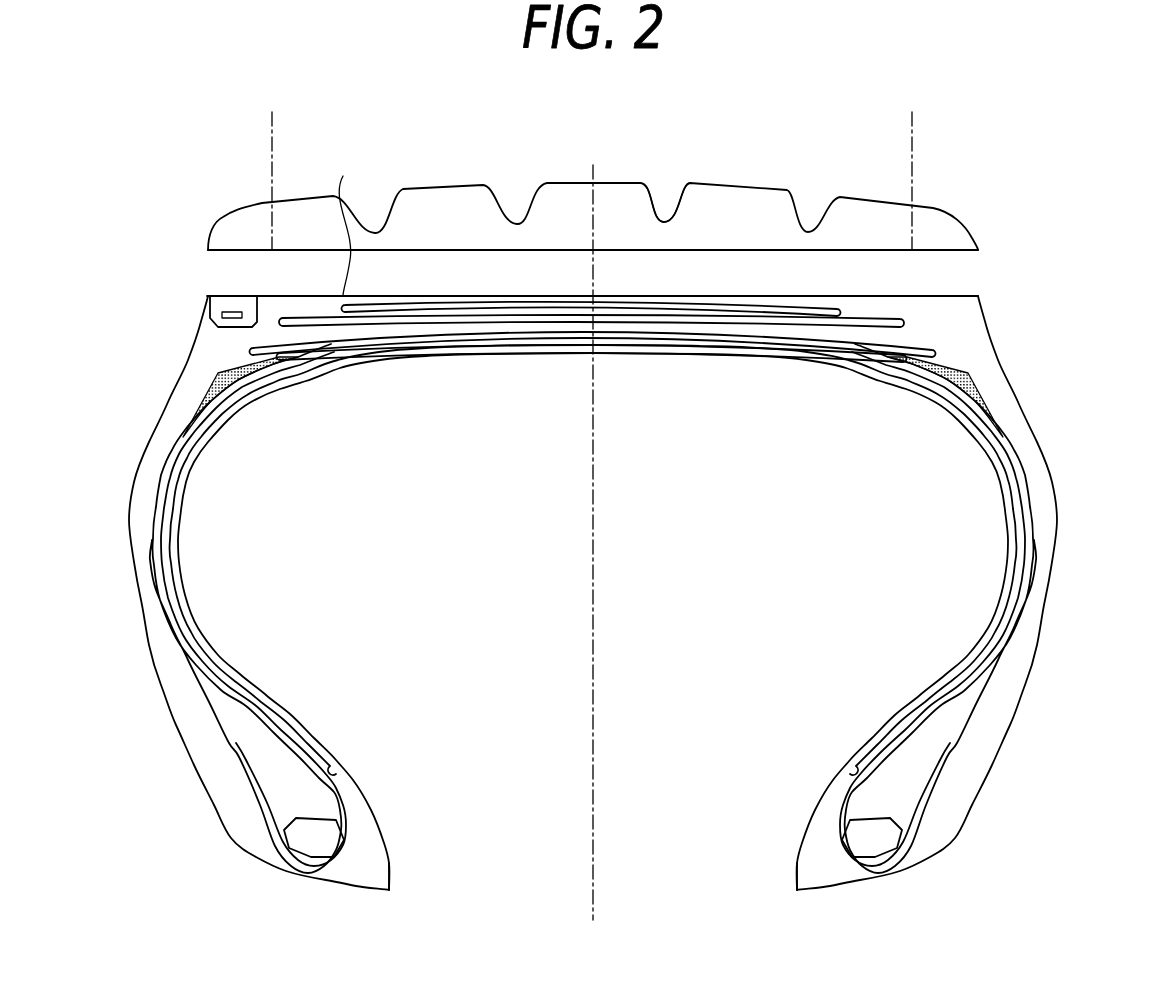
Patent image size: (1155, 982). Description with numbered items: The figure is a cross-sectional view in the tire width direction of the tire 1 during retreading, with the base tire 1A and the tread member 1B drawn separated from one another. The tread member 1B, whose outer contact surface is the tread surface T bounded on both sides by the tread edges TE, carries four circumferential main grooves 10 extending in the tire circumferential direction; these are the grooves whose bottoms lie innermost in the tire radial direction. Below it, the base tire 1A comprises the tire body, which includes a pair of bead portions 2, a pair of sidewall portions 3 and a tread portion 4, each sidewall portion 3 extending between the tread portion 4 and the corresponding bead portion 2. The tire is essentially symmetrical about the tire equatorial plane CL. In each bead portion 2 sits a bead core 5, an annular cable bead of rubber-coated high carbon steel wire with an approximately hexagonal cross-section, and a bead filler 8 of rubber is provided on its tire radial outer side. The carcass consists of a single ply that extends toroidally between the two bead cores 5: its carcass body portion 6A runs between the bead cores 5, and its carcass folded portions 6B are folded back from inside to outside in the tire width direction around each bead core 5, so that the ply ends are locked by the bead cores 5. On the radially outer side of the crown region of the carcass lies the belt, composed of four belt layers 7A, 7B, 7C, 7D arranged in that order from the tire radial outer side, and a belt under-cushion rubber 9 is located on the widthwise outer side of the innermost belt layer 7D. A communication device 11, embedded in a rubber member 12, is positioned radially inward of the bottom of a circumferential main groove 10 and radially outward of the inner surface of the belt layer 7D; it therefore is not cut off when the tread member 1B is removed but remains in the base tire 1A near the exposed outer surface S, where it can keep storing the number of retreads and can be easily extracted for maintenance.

The tire 1 is at (355, 129).
The base tire 1A is at (150, 645).
The tread member 1B is at (232, 237).
The bead portion 2 is at (178, 774).
The sidewall portion 3 is at (124, 467).
The tread portion 4 is at (292, 192).
The bead core 5 is at (880, 843).
The carcass body portion 6A is at (1026, 517).
The carcass folded portion 6B is at (940, 774).
The belt layer 7A is at (828, 310).
The belt layer 7B is at (884, 322).
The belt layer 7C is at (924, 353).
The belt layer 7D is at (868, 345).
The bead filler 8 is at (893, 800).
The belt under-cushion rubber 9 is at (967, 375).
The circumferential main groove 10 is at (662, 222).
The communication device 11 is at (227, 310).
The rubber member 12 is at (210, 313).
The surface of the base tire S is at (343, 222).
The tread surface T is at (735, 178).
The tread edge TE is at (591, 171).
The tire equatorial plane CL is at (595, 529).